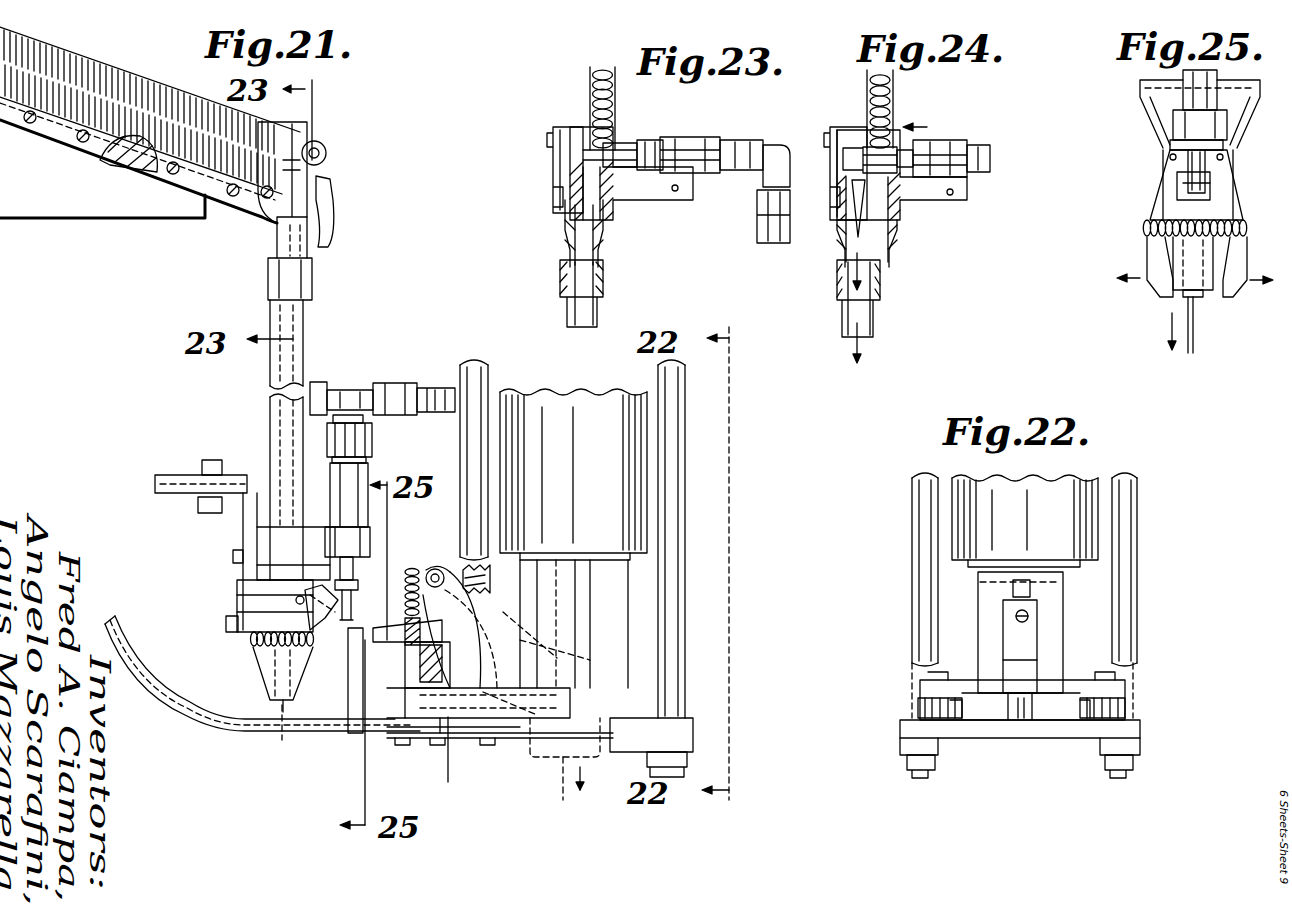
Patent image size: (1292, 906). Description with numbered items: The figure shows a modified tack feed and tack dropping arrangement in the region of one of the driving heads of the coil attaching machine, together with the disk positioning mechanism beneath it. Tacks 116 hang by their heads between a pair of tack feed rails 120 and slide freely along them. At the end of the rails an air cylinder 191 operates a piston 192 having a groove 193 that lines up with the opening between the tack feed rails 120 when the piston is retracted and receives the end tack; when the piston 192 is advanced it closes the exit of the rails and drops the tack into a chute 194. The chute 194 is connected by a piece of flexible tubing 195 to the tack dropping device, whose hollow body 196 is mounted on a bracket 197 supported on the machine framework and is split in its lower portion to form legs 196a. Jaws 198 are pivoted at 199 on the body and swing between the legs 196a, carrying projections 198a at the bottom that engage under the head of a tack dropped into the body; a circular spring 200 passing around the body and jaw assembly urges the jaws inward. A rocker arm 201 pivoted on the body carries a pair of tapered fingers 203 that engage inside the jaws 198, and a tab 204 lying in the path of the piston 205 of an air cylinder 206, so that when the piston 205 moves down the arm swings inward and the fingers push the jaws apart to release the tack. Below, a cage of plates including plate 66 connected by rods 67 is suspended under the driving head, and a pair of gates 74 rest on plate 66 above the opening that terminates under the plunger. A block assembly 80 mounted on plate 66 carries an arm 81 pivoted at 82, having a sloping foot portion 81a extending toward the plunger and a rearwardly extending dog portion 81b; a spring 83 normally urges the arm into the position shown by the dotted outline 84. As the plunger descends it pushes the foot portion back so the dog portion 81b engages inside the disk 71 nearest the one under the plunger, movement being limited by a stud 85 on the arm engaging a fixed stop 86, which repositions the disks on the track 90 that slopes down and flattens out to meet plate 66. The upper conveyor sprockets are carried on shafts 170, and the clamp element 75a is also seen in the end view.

In FIG. 21, the tack feed rails 120 is at (143, 90).
In FIG. 23, the tack feed rails 120 is at (612, 67).
In FIG. 24, the tack feed rails 120 is at (880, 73).
In FIG. 21, the tacks 116 is at (62, 133).
In FIG. 23, the tacks 116 is at (590, 120).
In FIG. 24, the tacks 116 is at (890, 113).
In FIG. 25, the tacks 116 is at (1190, 340).
In FIG. 21, the chute 194 is at (277, 245).
In FIG. 23, the chute 194 is at (583, 220).
In FIG. 24, the chute 194 is at (852, 220).
In FIG. 21, the flexible tubing 195 is at (293, 362).
In FIG. 23, the flexible tubing 195 is at (568, 312).
In FIG. 24, the flexible tubing 195 is at (843, 325).
In FIG. 21, the air cylinder 206 is at (360, 473).
In FIG. 25, the air cylinder 206 is at (1193, 95).
In FIG. 21, the hollow body 196 is at (283, 540).
In FIG. 25, the hollow body 196 is at (1217, 142).
In FIG. 21, the bracket 197 is at (247, 537).
In FIG. 21, the piston 205 is at (350, 582).
In FIG. 25, the piston 205 is at (1193, 167).
In FIG. 21, the rocker arm 201 is at (247, 602).
In FIG. 25, the rocker arm 201 is at (1213, 183).
In FIG. 21, the tapered fingers 203 is at (233, 628).
In FIG. 21, the circular spring 200 is at (247, 642).
In FIG. 25, the circular spring 200 is at (1147, 227).
In FIG. 21, the legs 196a is at (292, 677).
In FIG. 25, the legs 196a is at (1207, 283).
In FIG. 21, the tab 204 is at (343, 613).
In FIG. 25, the tab 204 is at (1180, 193).
In FIG. 21, the jaws 198 is at (280, 667).
In FIG. 25, the jaws 198 is at (1153, 260).
In FIG. 25, the projection 198a is at (1160, 290).
In FIG. 25, the pivot 199 is at (1170, 157).
In FIG. 21, the track 90 is at (115, 640).
In FIG. 21, the fixed stop 86 is at (353, 693).
In FIG. 21, the disk 71 is at (480, 740).
In FIG. 21, the plate 66 is at (680, 727).
In FIG. 22, the plate 66 is at (1120, 730).
In FIG. 21, the stud 85 is at (410, 650).
In FIG. 21, the block assembly 80 is at (405, 685).
In FIG. 22, the block assembly 80 is at (1035, 592).
In FIG. 21, the arm 81 is at (457, 563).
In FIG. 22, the arm 81 is at (1025, 635).
In FIG. 21, the sloping foot portion 81a is at (533, 700).
In FIG. 22, the sloping foot portion 81a is at (1020, 680).
In FIG. 21, the dog portion 81b is at (447, 735).
In FIG. 21, the pivot 82 is at (433, 568).
In FIG. 21, the spring 83 is at (400, 593).
In FIG. 21, the dotted outline 84 is at (503, 612).
In FIG. 21, the shafts 170 is at (623, 473).
In FIG. 22, the shafts 170 is at (1073, 513).
In FIG. 21, the rods 67 is at (667, 557).
In FIG. 22, the rods 67 is at (920, 598).
In FIG. 22, the gates 74 is at (1055, 707).
In FIG. 22, the clamp 75a is at (1085, 703).
In FIG. 23, the groove 193 is at (587, 177).
In FIG. 24, the groove 193 is at (860, 133).
In FIG. 23, the piston 192 is at (623, 145).
In FIG. 24, the piston 192 is at (890, 170).
In FIG. 23, the air cylinder 191 is at (707, 150).
In FIG. 24, the air cylinder 191 is at (977, 150).